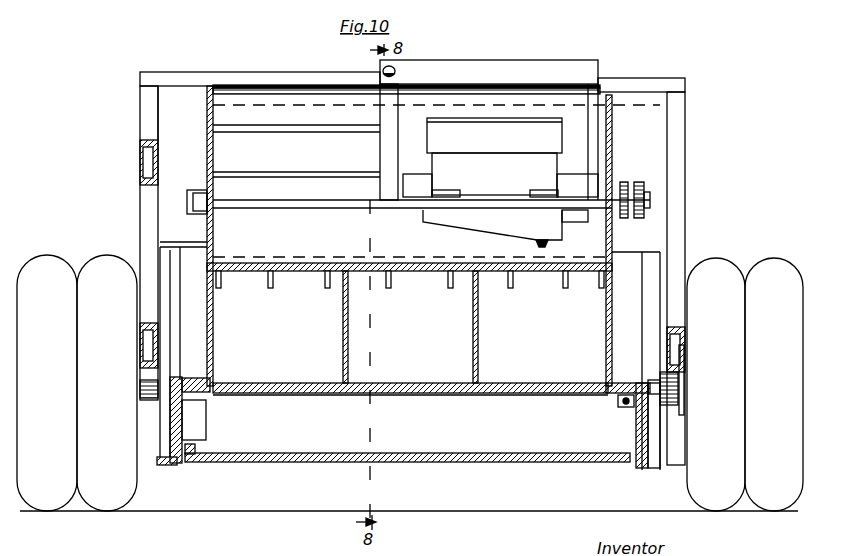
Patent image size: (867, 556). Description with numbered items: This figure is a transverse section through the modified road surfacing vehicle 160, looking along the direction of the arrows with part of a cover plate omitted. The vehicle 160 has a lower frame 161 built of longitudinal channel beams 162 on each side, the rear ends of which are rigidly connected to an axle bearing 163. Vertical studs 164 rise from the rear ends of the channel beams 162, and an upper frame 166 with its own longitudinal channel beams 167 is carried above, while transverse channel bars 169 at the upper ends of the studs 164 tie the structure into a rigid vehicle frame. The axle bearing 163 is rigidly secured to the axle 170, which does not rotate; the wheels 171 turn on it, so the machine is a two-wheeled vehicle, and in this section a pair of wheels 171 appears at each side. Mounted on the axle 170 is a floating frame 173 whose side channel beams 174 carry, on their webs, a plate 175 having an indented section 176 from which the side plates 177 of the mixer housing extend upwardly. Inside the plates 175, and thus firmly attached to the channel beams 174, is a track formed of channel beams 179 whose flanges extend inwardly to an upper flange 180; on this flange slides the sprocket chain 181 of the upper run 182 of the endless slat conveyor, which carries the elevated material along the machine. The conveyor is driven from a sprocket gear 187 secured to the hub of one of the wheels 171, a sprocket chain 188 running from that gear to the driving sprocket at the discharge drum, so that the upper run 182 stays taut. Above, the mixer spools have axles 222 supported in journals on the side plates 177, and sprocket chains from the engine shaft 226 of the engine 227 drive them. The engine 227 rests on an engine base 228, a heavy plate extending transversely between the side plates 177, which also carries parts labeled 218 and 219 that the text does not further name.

The vehicle 160 is at (120, 120).
The lower frame 161 is at (122, 362).
The longitudinal channel beams 162 is at (143, 326).
The axle bearing 163 is at (670, 408).
The vertical studs 164 is at (140, 213).
The upper frame 166 is at (135, 115).
The longitudinal channel beams 167 is at (160, 163).
The transverse channel bars 169 is at (206, 72).
The axle 170 is at (140, 400).
The wheels 171 is at (410, 383).
The floating frame 173 is at (149, 452).
The side channel beams 174 is at (170, 420).
The plate 175 is at (173, 378).
The indented section 176 is at (213, 356).
The side plates 177 is at (214, 320).
The channel beams 179 is at (190, 430).
The upper flange 180 is at (616, 404).
The sprocket chain 181 is at (198, 456).
The upper run 182 is at (508, 374).
The sprocket gear 187 is at (680, 382).
The sprocket chain 188 is at (686, 401).
The motor housing 218 is at (313, 110).
The top plate 219 is at (283, 92).
The axles 222 is at (196, 205).
The engine shaft 226 is at (650, 199).
The engine 227 is at (628, 76).
The engine base 228 is at (384, 213).